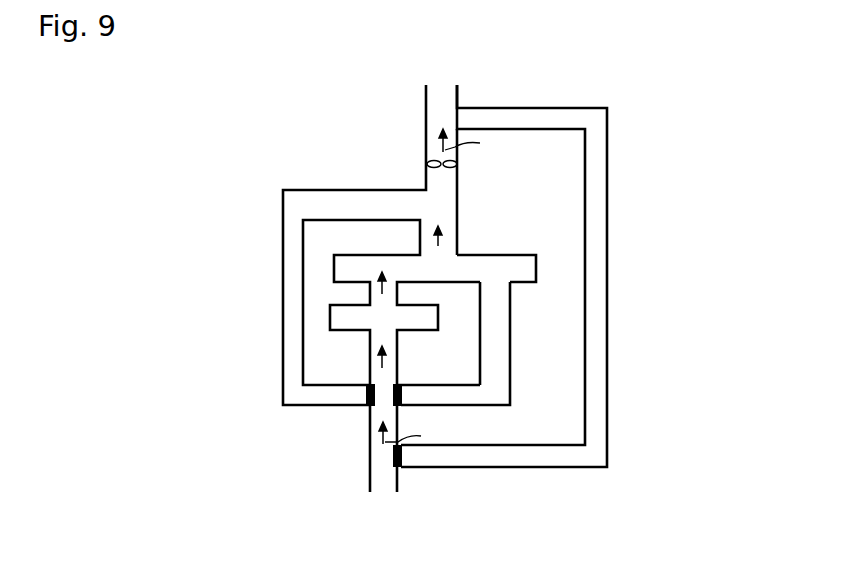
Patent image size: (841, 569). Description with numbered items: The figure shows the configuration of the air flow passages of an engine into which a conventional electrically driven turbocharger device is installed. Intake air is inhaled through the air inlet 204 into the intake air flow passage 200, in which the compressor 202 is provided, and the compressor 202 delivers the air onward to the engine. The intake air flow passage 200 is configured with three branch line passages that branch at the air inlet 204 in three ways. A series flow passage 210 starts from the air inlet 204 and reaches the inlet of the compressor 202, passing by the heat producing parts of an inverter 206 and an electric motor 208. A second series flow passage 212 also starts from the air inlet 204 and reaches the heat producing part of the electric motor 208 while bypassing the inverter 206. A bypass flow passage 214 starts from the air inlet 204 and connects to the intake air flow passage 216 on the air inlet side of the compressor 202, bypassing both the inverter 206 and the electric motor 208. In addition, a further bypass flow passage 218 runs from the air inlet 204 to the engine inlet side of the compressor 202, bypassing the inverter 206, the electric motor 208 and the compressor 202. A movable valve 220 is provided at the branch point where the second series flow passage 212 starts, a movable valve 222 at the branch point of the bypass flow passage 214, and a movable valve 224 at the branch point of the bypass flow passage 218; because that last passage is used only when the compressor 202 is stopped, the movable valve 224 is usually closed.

The intake air flow passage 200 is at (670, 77).
The compressor 202 is at (458, 165).
The air inlet 204 is at (370, 473).
The inverter 206 is at (382, 317).
The electric motor 208 is at (527, 271).
The series flow passage 210 is at (398, 362).
The second series flow passage 212 is at (511, 325).
The bypass flow passage 214 is at (305, 190).
The intake air flow passage 216 is at (426, 176).
The bypass flow passage 218 is at (609, 205).
The movable valve 220 is at (391, 404).
The movable valve 222 is at (363, 390).
The movable valve 224 is at (399, 457).